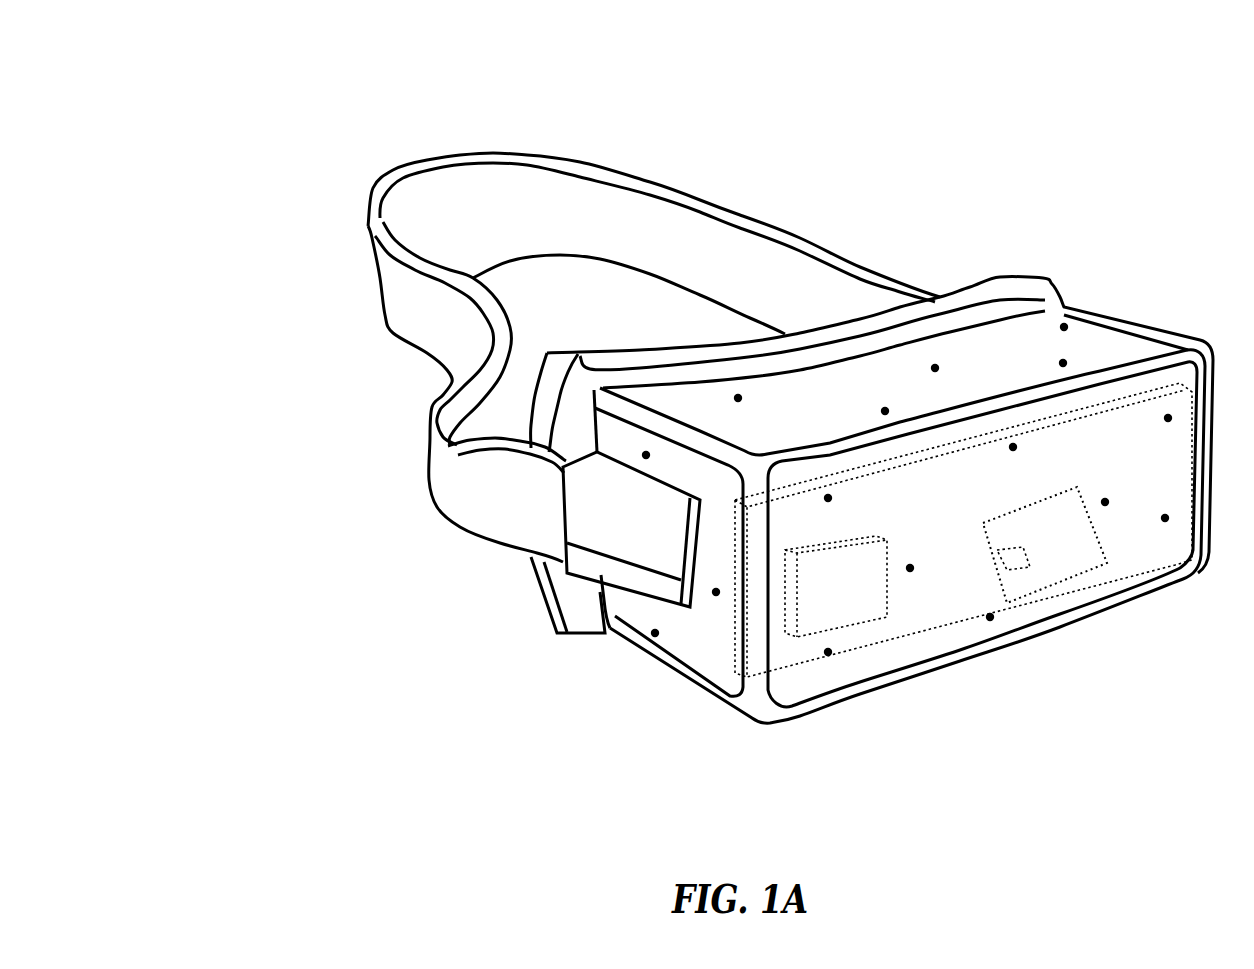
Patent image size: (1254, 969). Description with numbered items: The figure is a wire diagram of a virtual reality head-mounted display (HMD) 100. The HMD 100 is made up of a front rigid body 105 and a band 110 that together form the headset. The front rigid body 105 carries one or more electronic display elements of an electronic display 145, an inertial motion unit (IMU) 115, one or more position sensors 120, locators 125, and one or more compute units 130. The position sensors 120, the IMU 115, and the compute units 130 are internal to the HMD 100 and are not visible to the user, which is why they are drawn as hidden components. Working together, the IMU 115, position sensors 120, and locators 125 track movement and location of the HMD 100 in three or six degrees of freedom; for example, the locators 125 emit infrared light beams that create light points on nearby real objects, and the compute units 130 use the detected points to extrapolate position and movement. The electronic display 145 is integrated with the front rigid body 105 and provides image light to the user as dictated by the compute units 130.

The virtual reality head-mounted display (HMD) 100 is at (236, 127).
The front rigid body 105 is at (771, 723).
The band 110 is at (378, 289).
The inertial motion unit (IMU) 115 is at (986, 530).
The position sensors 120 is at (1005, 567).
The locators 125 is at (878, 412).
The compute units 130 is at (840, 548).
The electronic display 145 is at (1190, 473).